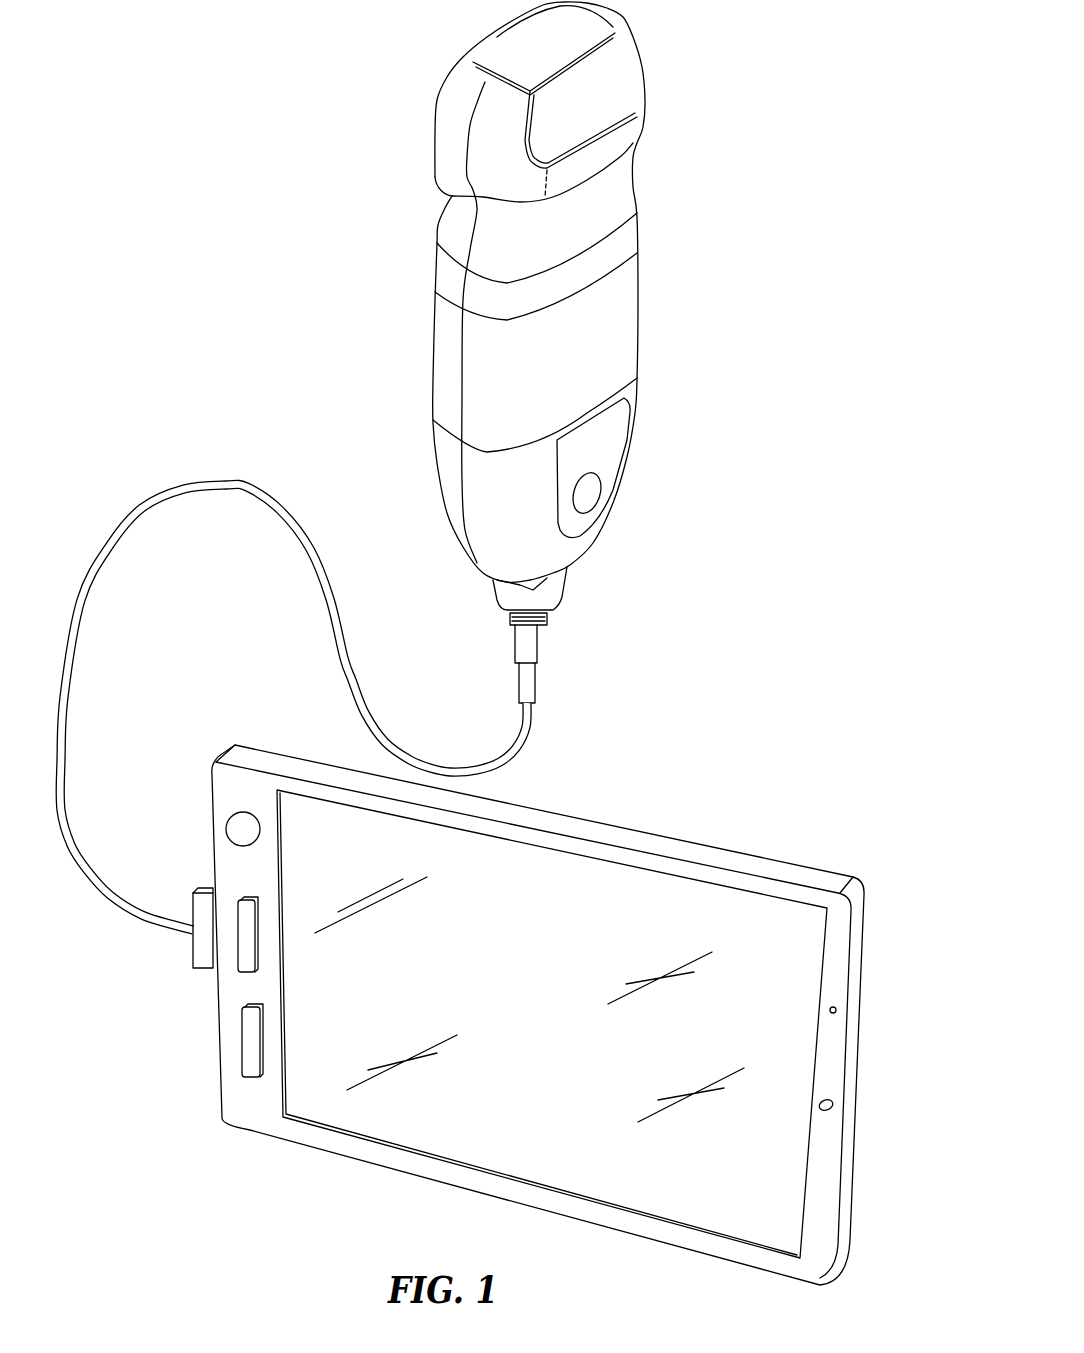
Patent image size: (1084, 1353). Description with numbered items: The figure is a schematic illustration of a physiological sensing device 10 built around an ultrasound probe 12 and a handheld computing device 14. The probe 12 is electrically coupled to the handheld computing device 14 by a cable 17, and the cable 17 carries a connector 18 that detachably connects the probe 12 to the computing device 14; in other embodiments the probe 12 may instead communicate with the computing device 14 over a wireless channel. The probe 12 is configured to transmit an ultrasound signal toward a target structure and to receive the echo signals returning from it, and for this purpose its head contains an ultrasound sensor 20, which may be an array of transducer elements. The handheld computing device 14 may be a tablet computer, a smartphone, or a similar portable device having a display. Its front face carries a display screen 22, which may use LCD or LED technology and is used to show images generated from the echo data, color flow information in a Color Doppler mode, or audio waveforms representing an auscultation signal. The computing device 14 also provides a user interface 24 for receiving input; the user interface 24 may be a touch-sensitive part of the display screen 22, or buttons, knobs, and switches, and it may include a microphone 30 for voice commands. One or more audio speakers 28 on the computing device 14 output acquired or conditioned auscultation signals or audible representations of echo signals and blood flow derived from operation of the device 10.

The device 10 is at (867, 293).
The probe 12 is at (617, 323).
The handheld computing device 14 is at (516, 1015).
The cable 17 is at (249, 484).
The connector 18 is at (193, 947).
The ultrasound sensor 20 is at (565, 35).
The display screen 22 is at (546, 1027).
The user interface 24 is at (247, 1047).
The audio speaker 28 is at (832, 1108).
The microphone 30 is at (836, 1010).